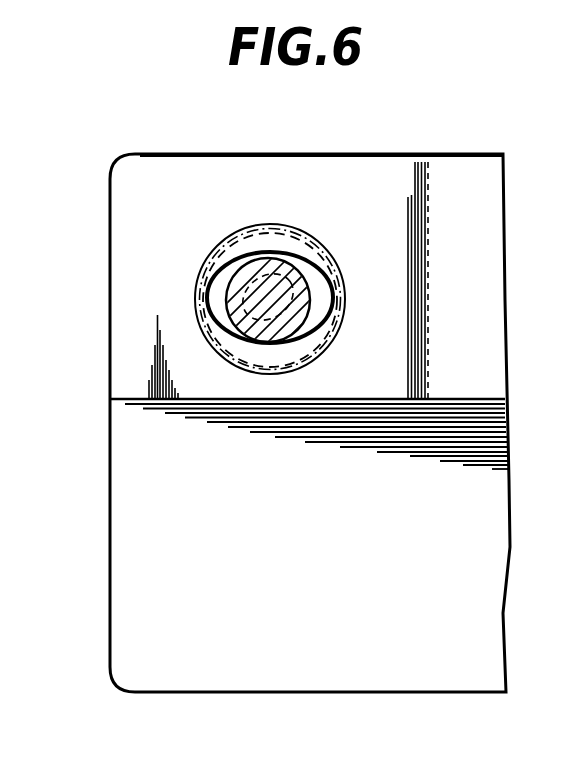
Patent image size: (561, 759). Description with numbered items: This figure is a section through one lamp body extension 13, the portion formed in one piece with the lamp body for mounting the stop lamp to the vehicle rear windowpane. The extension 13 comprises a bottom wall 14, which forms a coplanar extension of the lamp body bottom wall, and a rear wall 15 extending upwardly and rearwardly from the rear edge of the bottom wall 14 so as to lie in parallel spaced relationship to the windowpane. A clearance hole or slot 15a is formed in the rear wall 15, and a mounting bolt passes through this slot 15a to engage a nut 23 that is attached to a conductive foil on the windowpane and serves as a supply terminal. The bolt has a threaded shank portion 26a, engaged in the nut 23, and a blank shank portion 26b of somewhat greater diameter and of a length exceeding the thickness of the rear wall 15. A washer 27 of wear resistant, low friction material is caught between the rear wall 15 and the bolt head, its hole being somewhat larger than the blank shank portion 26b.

The lamp body extension 13 is at (442, 153).
The bottom wall 14 is at (138, 506).
The rear wall 15 is at (180, 181).
The clearance hole or slot 15a is at (305, 266).
The nut 23 is at (247, 240).
The threaded shank portion 26a is at (302, 257).
The blank shank portion 26b is at (233, 282).
The washer 27 is at (199, 297).